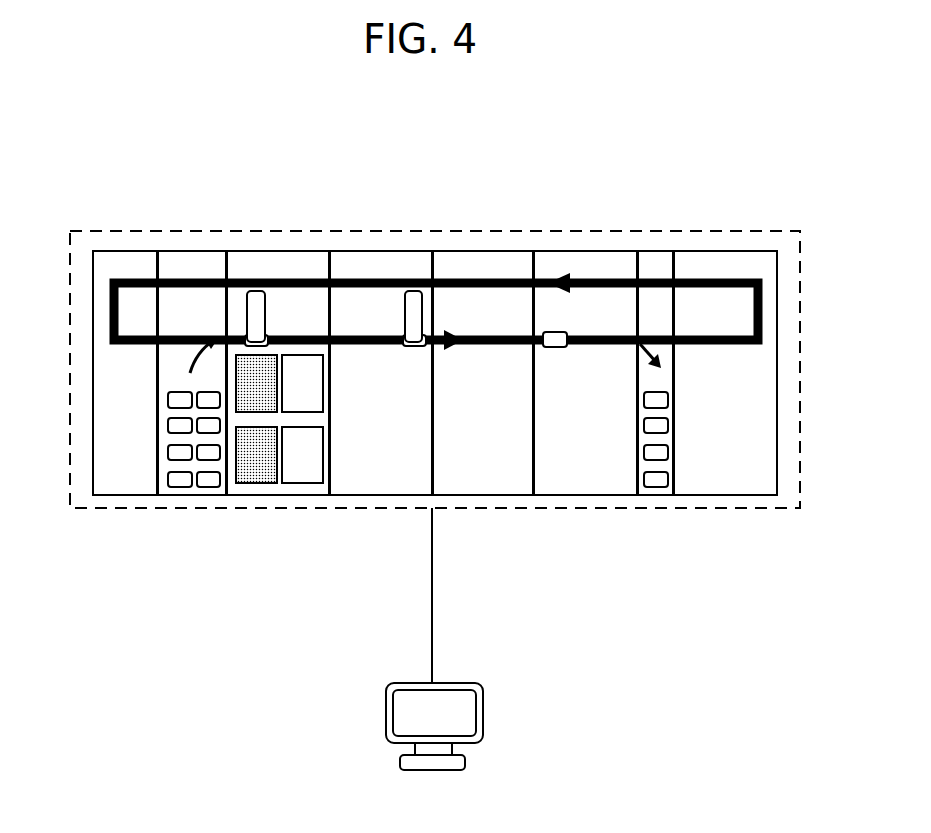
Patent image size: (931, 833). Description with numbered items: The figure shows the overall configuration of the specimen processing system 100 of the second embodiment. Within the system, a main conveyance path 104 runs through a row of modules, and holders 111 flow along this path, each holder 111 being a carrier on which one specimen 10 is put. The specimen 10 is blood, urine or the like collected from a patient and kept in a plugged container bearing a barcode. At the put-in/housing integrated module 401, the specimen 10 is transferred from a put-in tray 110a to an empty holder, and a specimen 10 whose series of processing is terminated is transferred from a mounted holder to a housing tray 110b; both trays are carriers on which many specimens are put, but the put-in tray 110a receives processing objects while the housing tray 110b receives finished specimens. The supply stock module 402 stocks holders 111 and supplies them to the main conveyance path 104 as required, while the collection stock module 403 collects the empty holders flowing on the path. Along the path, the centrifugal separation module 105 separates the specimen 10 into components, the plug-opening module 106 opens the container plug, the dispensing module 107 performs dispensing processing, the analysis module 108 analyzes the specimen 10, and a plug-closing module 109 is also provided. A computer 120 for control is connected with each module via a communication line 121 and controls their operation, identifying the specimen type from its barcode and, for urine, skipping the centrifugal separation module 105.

The specimen processing system 100 is at (761, 510).
The plug-closing module 109 is at (122, 262).
The supply stock module 402 is at (190, 262).
The put-in/housing integrated module 401 is at (273, 262).
The centrifugal separation module 105 is at (385, 262).
The plug-opening module 106 is at (497, 262).
The dispensing module 107 is at (580, 262).
The collection stock module 403 is at (657, 262).
The analysis module 108 is at (728, 262).
The main conveyance path 104 is at (493, 347).
The housing tray 110b is at (258, 466).
The put-in tray 110a is at (300, 464).
The holder 111 is at (266, 338).
The specimen 10 is at (258, 308).
The communication line 121 is at (434, 606).
The computer for control 120 is at (484, 708).